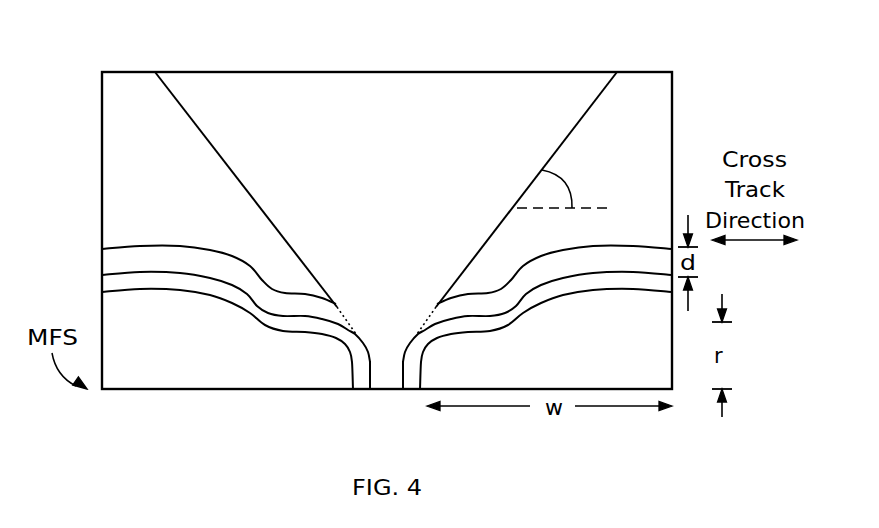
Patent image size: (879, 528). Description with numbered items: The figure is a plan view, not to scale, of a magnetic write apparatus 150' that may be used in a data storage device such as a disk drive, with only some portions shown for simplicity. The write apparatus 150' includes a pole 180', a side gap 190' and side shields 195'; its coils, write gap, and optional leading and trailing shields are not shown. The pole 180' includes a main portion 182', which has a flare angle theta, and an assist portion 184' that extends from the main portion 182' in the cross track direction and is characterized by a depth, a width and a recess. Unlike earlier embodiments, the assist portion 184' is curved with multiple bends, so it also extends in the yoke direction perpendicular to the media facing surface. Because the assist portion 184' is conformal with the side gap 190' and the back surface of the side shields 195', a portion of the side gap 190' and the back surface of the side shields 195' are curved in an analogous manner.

The magnetic write apparatus 150' is at (387, 208).
The pole 180' is at (350, 217).
The main portion 182' is at (386, 189).
The assist portion 184' is at (386, 304).
The side gap 190' is at (338, 398).
The side shields 195' is at (386, 339).